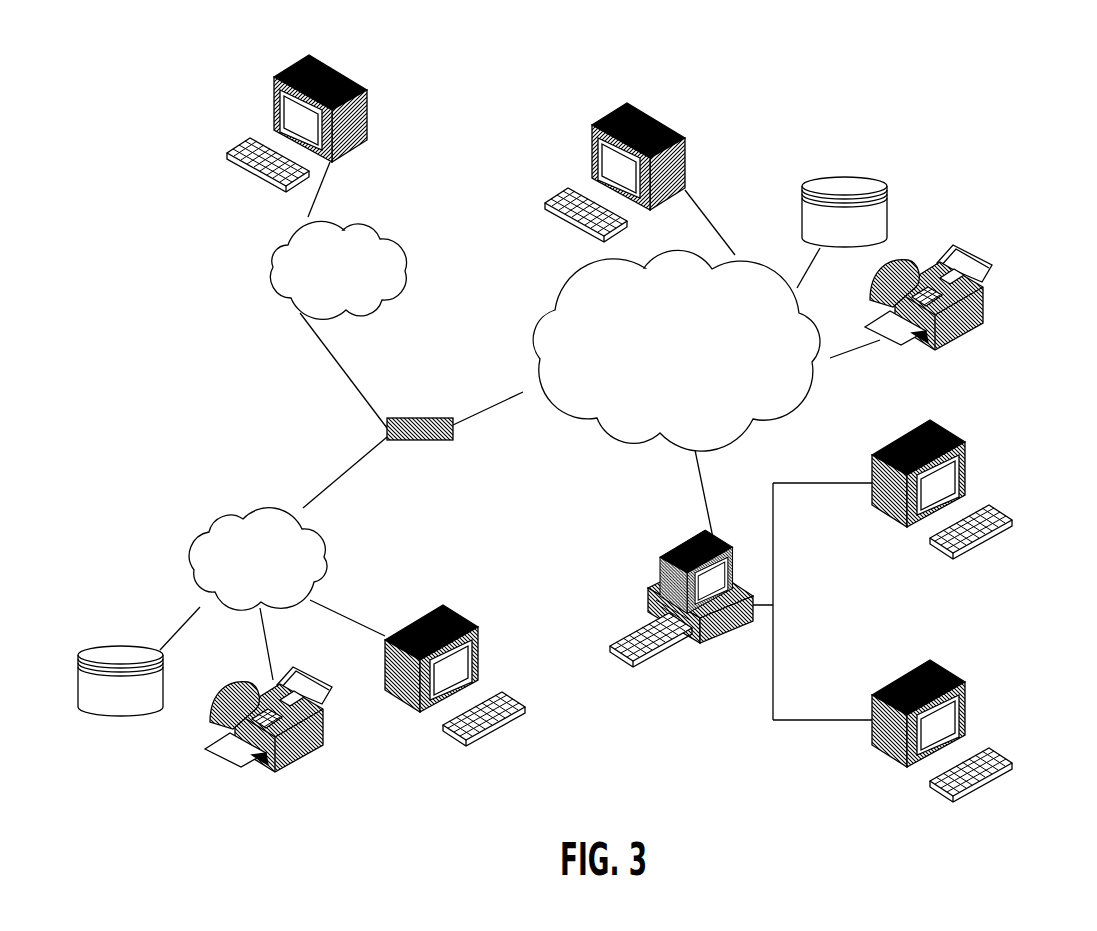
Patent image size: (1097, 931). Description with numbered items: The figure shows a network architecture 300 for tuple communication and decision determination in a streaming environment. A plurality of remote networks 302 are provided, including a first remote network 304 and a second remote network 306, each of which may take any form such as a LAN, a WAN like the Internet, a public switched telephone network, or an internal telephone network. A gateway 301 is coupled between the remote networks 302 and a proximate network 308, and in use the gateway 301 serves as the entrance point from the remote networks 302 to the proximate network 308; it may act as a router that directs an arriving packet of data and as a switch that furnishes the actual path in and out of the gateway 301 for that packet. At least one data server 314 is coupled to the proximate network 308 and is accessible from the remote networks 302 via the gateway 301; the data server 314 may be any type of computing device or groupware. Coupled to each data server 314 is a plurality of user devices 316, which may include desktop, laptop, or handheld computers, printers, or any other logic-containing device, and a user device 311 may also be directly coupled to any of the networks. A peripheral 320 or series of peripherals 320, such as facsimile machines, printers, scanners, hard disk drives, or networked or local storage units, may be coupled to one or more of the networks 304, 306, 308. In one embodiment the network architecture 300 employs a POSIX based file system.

The network architecture 300 is at (1007, 95).
The gateway 301 is at (420, 416).
The remote networks 302 is at (240, 350).
The first remote network 304 is at (185, 535).
The second remote network 306 is at (420, 275).
The proximate network 308 is at (798, 413).
The user device 311 is at (685, 170).
The data server 314 is at (658, 562).
The user devices 316 is at (367, 105).
The peripheral 320 is at (843, 177).